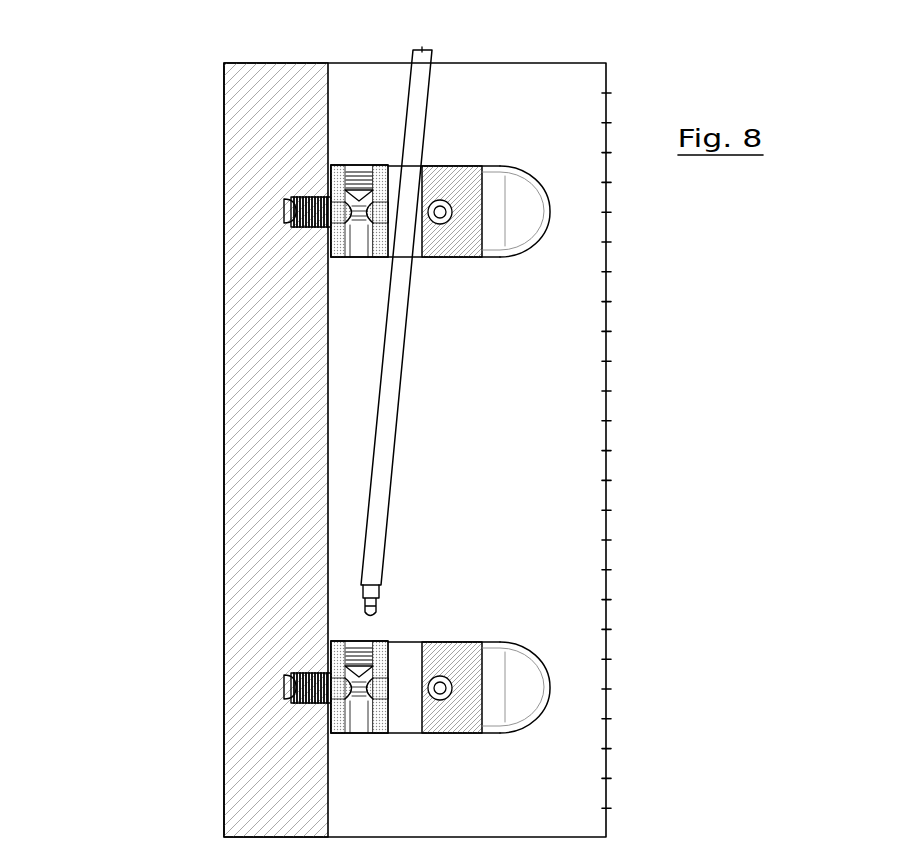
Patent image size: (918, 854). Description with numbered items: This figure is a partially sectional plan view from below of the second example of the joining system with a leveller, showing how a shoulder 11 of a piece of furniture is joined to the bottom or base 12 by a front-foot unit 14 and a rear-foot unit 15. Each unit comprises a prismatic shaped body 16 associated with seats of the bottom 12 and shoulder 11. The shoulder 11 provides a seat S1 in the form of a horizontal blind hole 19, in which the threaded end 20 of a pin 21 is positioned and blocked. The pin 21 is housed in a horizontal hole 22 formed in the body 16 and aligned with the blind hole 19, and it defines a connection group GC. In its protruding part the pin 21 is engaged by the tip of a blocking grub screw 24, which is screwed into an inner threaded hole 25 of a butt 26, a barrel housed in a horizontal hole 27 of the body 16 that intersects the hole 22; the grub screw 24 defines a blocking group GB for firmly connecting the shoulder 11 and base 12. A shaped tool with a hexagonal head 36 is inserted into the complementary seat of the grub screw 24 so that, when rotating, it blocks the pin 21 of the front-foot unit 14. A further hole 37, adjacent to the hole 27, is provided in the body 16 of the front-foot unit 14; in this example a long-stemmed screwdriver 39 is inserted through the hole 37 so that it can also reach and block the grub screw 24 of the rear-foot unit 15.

The shoulder 11 is at (240, 412).
The bottom or base 12 is at (550, 401).
The front-foot unit 14 is at (548, 268).
The rear-foot unit 15 is at (547, 747).
The body 16 is at (537, 182).
The horizontal blind hole 19 is at (283, 207).
The threaded end 20 is at (310, 197).
The pin 21 is at (335, 205).
The horizontal hole 22 is at (358, 240).
The blocking grub screw 24 is at (357, 168).
The inner threaded hole 25 is at (365, 165).
The butt 26 is at (342, 170).
The horizontal hole 27 is at (338, 248).
The hexagonal head 36 is at (363, 642).
The further hole 37 is at (417, 255).
The long-stemmed screwdriver 39 is at (388, 413).
The blocking group GB is at (380, 134).
The connection group GC is at (318, 236).
The seat S1 is at (283, 223).